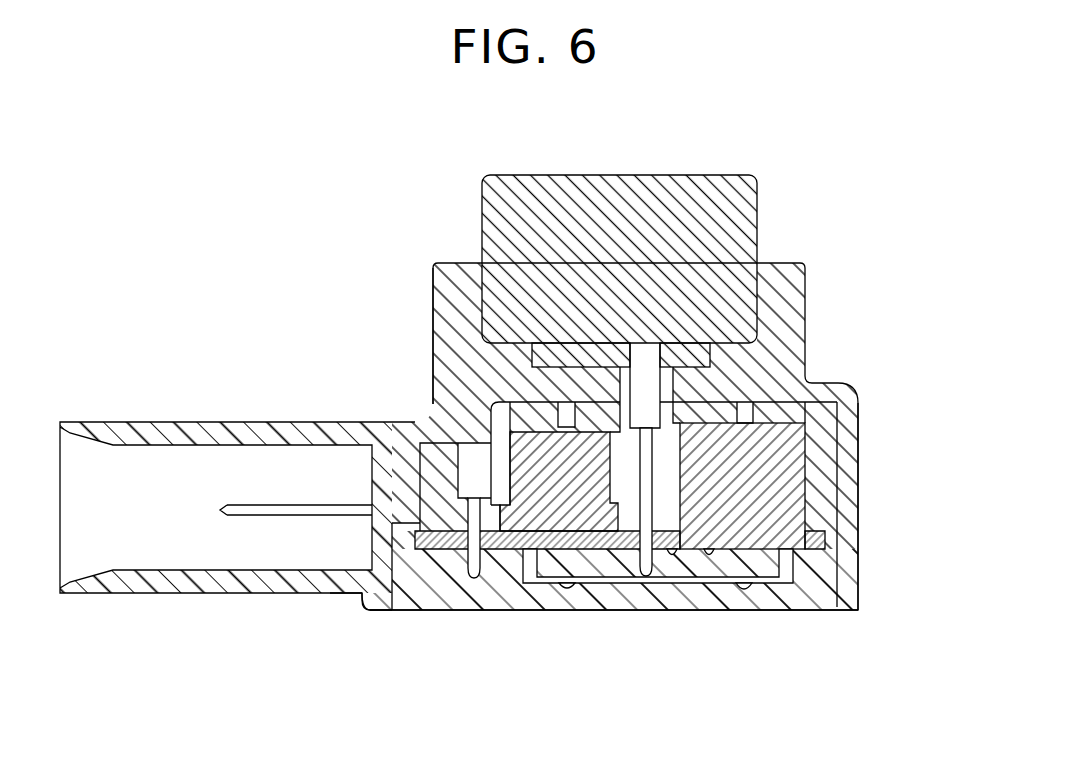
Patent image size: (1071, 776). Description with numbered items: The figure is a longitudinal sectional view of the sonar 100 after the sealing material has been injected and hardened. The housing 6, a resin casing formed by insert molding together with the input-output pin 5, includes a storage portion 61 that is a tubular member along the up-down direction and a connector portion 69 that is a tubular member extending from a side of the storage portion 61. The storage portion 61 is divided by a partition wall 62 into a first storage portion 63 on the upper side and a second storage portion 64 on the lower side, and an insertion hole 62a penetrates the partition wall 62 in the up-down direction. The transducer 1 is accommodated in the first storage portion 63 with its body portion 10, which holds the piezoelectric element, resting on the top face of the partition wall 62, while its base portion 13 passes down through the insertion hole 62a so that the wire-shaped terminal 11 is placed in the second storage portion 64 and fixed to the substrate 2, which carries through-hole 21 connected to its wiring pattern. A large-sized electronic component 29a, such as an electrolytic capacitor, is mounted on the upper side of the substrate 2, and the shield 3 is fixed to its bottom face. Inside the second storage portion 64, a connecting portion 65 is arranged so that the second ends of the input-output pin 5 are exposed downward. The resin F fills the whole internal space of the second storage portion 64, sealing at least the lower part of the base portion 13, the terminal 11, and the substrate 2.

The sonar 100 is at (256, 208).
The transducer 1 is at (619, 230).
The body portion 10 is at (710, 190).
The storage portion 61 is at (810, 292).
The first storage portion 63 is at (447, 300).
The second storage portion 64 is at (862, 592).
The partition wall 62 is at (533, 412).
The insertion hole 62a is at (668, 386).
The base portion 13 is at (677, 442).
The large-sized electronic component 29a is at (780, 488).
The substrate 2 is at (822, 543).
The connecting portion 65 is at (446, 476).
The connector portion 69 is at (163, 422).
The resin F is at (444, 585).
The housing 6 is at (345, 600).
The input-output pin 5 is at (262, 512).
The terminal 11 is at (662, 563).
The through-hole 21 is at (633, 578).
The shield 3 is at (797, 584).